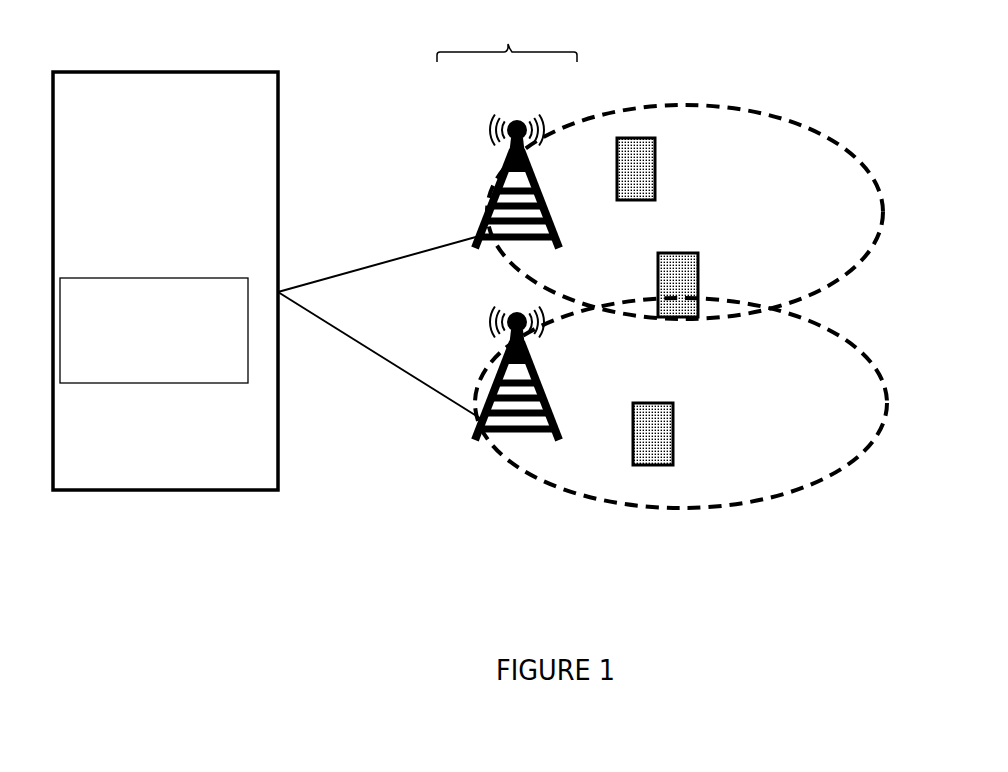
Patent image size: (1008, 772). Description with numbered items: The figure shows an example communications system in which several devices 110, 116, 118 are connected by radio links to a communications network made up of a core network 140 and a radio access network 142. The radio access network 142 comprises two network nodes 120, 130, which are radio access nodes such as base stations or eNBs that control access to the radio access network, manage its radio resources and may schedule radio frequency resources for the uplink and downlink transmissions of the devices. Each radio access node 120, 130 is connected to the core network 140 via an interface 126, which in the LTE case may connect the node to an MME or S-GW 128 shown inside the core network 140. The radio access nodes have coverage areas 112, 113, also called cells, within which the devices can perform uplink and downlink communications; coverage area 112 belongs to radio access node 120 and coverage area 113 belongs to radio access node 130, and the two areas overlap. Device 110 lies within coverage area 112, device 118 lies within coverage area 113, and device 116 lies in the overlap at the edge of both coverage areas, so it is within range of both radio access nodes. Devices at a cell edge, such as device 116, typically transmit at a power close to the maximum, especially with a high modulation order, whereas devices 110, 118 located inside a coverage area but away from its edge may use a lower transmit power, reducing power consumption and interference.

The device 110 is at (655, 190).
The coverage area 112 is at (792, 125).
The coverage area 113 is at (808, 490).
The device 116 is at (698, 268).
The device 118 is at (673, 413).
The network node 120 is at (493, 152).
The interface 126 is at (410, 252).
The MME or S-GW 128 is at (154, 330).
The network node 130 is at (505, 347).
The core network 140 is at (165, 281).
The radio access network 142 is at (507, 34).